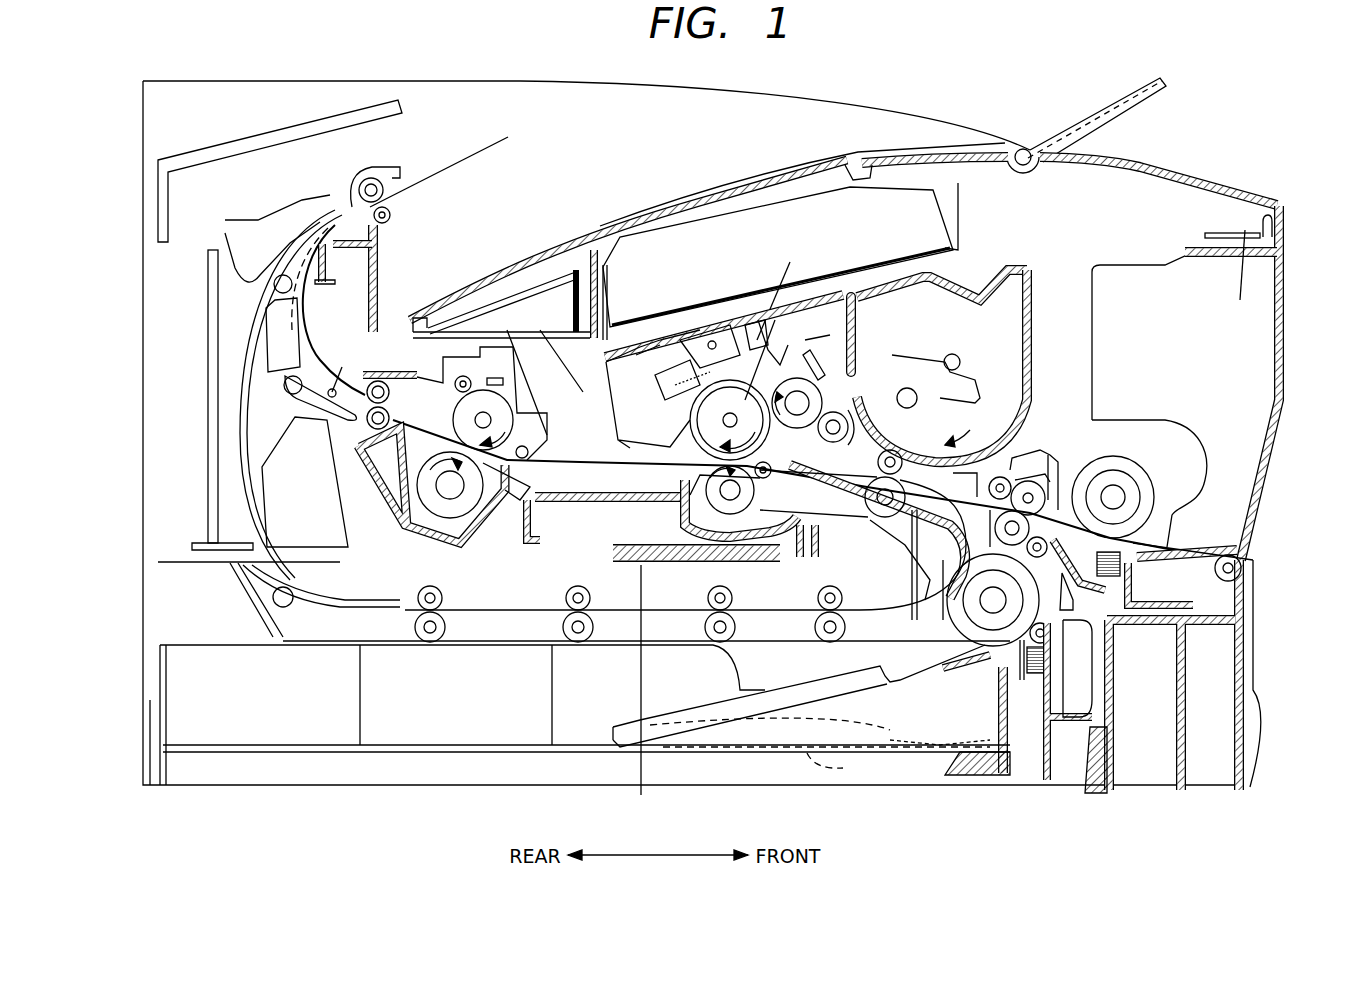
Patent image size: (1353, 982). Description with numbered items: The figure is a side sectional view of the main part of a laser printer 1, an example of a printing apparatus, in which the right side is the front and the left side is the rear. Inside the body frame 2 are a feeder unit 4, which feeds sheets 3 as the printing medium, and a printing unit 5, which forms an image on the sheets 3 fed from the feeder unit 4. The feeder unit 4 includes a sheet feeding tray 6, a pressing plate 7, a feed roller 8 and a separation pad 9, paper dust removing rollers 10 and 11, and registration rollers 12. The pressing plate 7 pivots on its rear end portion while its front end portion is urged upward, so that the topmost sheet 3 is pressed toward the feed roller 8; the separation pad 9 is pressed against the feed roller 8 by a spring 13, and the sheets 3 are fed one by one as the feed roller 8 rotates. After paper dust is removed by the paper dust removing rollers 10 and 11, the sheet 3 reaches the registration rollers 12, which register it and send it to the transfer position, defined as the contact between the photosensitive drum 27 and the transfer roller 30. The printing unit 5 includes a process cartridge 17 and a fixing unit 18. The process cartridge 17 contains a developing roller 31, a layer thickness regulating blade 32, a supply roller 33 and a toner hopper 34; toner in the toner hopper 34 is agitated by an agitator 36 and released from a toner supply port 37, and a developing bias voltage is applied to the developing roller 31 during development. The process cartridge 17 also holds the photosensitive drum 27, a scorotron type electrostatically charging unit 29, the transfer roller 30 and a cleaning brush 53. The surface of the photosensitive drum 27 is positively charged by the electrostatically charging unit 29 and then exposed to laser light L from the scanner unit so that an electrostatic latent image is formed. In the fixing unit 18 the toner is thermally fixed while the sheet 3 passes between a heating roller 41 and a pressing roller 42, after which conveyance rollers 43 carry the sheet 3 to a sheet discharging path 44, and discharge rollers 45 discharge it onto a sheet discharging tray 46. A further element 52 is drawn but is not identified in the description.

The laser printer 1 is at (728, 822).
The body frame 2 is at (143, 462).
The sheets 3 is at (470, 160).
The feeder unit 4 is at (215, 640).
The printing unit 5 is at (592, 503).
The sheet feeding tray 6 is at (152, 696).
The pressing plate 7 is at (780, 678).
The feed roller 8 is at (953, 585).
The separation pad 9 is at (990, 662).
The paper dust removing roller 10 is at (1080, 625).
The paper dust removing roller 11 is at (1040, 468).
The registration rollers 12 is at (867, 492).
The spring 13 is at (997, 693).
The process cartridge 17 is at (993, 258).
The fixing unit 18 is at (520, 462).
The photosensitive drum 27 is at (665, 452).
The electrostatically charging unit 29 is at (724, 382).
The transfer roller 30 is at (757, 563).
The developing roller 31 is at (765, 387).
The layer thickness regulating blade 32 is at (818, 375).
The supply roller 33 is at (855, 412).
The toner hopper 34 is at (1033, 336).
The agitator 36 is at (962, 390).
The toner supply port 37 is at (862, 358).
The heating roller 41 is at (528, 392).
The pressing roller 42 is at (462, 540).
The conveyance rollers 43 is at (404, 412).
The sheet discharging path 44 is at (305, 330).
The discharge rollers 45 is at (353, 190).
The sheet discharging tray 46 is at (535, 250).
The support plate 52 is at (637, 694).
The cleaning brush 53 is at (663, 385).
The laser light L is at (775, 305).